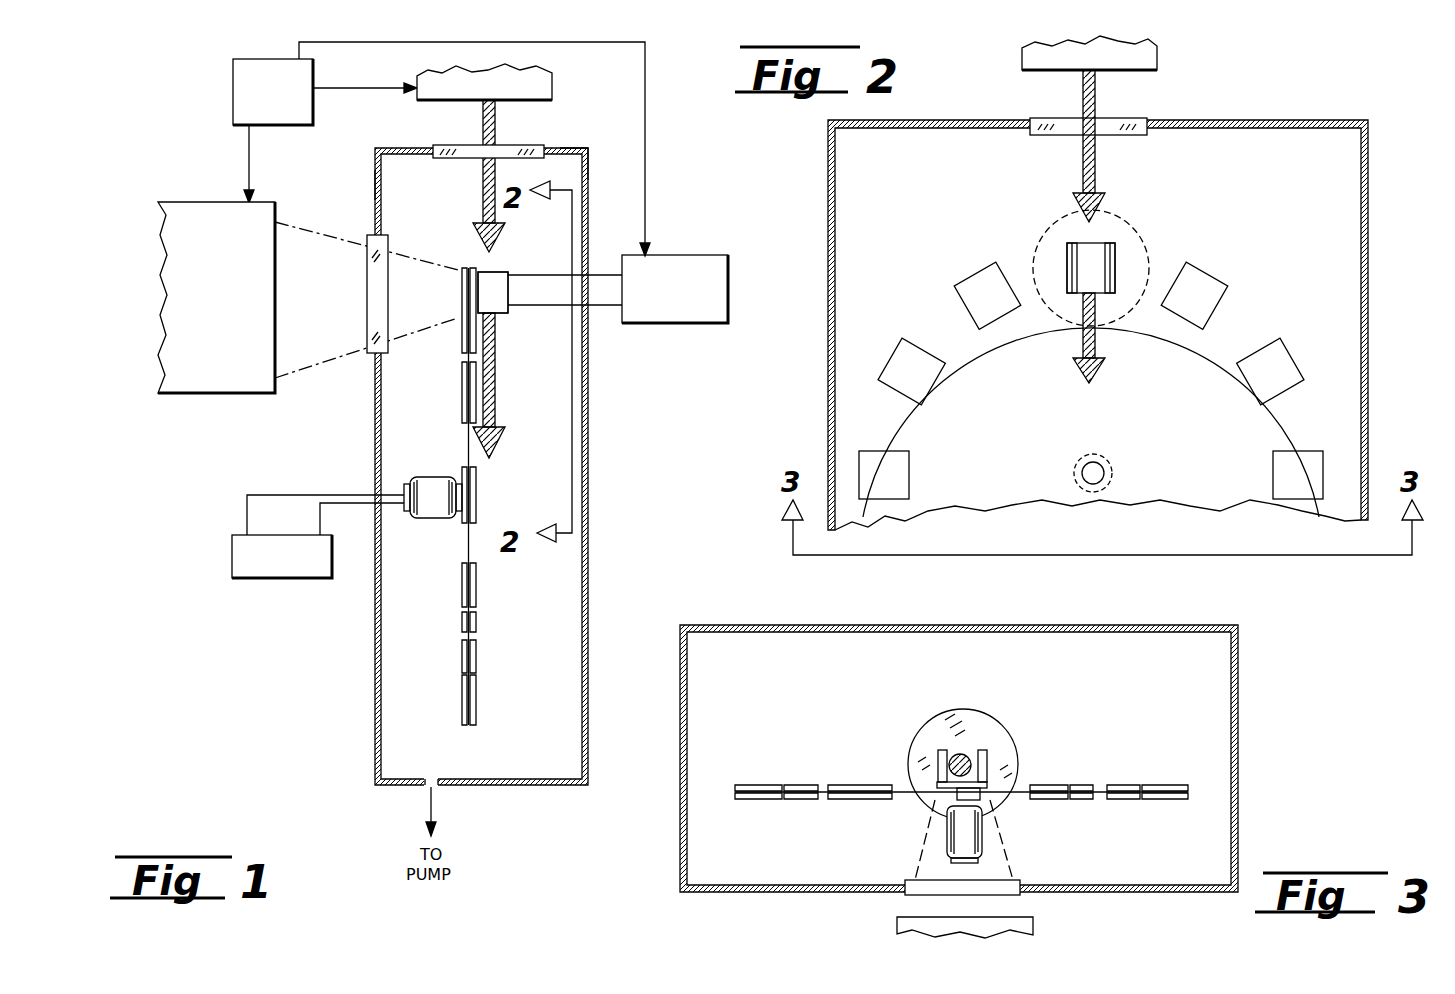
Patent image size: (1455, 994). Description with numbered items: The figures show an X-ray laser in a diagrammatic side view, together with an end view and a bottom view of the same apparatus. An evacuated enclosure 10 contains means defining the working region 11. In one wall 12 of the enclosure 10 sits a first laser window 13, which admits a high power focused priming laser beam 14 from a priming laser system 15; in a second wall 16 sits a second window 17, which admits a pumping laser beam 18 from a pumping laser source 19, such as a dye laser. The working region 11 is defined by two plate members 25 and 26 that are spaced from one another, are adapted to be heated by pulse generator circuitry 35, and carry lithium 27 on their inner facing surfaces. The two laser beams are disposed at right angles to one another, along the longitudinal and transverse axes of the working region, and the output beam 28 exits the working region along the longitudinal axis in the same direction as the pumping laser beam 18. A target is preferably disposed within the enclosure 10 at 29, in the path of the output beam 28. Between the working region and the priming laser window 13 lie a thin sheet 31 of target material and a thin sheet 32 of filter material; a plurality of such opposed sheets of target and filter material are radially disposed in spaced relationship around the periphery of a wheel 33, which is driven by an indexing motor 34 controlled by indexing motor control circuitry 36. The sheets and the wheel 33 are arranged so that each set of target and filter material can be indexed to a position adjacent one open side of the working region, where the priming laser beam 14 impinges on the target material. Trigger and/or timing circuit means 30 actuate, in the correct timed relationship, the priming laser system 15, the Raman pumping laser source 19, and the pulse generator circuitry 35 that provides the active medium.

In FIG. 1, the evacuated enclosure 10 is at (363, 656).
In FIG. 1, the working region 11 is at (519, 271).
In FIG. 1, the wall 12 is at (375, 180).
In FIG. 1, the first laser window 13 is at (377, 354).
In FIG. 3, the first laser window 13 is at (1020, 882).
In FIG. 1, the priming laser beam 14 is at (296, 226).
In FIG. 3, the priming laser beam 14 is at (918, 850).
In FIG. 1, the priming laser system 15 is at (205, 202).
In FIG. 3, the priming laser system 15 is at (897, 926).
In FIG. 1, the second wall 16 is at (583, 150).
In FIG. 1, the second window 17 is at (540, 145).
In FIG. 2, the second window 17 is at (1050, 118).
In FIG. 3, the second window 17 is at (1013, 747).
In FIG. 1, the pumping laser beam 18 is at (483, 120).
In FIG. 2, the pumping laser beam 18 is at (1097, 98).
In FIG. 3, the pumping laser beam 18 is at (958, 754).
In FIG. 1, the pumping laser source 19 is at (552, 88).
In FIG. 2, the pumping laser source 19 is at (1160, 56).
In FIG. 1, the plate member 25 is at (504, 314).
In FIG. 2, the plate member 25 is at (1060, 300).
In FIG. 3, the plate member 25 is at (939, 751).
In FIG. 2, the plate member 26 is at (1122, 296).
In FIG. 3, the plate member 26 is at (988, 758).
In FIG. 2, the lithium 27 is at (1050, 240).
In FIG. 1, the output beam 28 is at (497, 400).
In FIG. 2, the output beam 28 is at (1097, 345).
In FIG. 1, the target 29 is at (509, 751).
In FIG. 1, the trigger and/or timing circuit means 30 is at (233, 88).
In FIG. 1, the thin sheet of target material 31 is at (462, 268).
In FIG. 3, the thin sheet of target material 31 is at (753, 800).
In FIG. 1, the thin sheet of filter material 32 is at (472, 268).
In FIG. 3, the thin sheet of filter material 32 is at (752, 785).
In FIG. 1, the wheel 33 is at (468, 540).
In FIG. 2, the wheel 33 is at (1248, 298).
In FIG. 3, the wheel 33 is at (901, 791).
In FIG. 1, the indexing motor 34 is at (425, 477).
In FIG. 3, the indexing motor 34 is at (985, 829).
In FIG. 1, the pulse generator circuitry 35 is at (676, 323).
In FIG. 1, the indexing motor control circuitry 36 is at (283, 578).